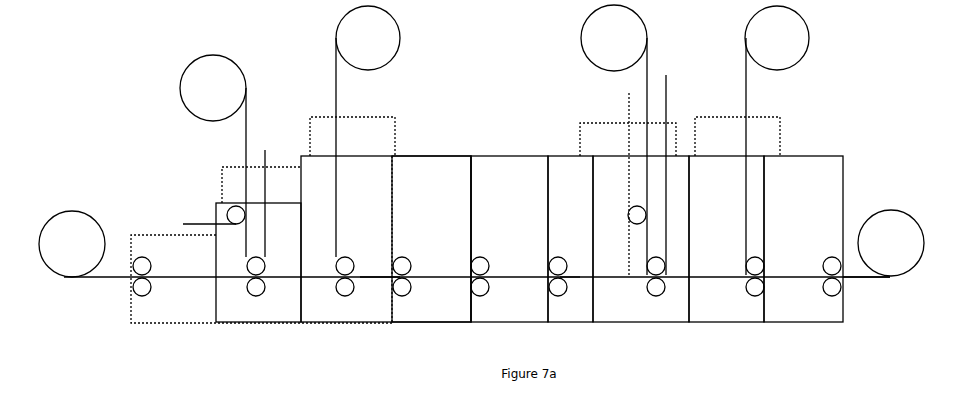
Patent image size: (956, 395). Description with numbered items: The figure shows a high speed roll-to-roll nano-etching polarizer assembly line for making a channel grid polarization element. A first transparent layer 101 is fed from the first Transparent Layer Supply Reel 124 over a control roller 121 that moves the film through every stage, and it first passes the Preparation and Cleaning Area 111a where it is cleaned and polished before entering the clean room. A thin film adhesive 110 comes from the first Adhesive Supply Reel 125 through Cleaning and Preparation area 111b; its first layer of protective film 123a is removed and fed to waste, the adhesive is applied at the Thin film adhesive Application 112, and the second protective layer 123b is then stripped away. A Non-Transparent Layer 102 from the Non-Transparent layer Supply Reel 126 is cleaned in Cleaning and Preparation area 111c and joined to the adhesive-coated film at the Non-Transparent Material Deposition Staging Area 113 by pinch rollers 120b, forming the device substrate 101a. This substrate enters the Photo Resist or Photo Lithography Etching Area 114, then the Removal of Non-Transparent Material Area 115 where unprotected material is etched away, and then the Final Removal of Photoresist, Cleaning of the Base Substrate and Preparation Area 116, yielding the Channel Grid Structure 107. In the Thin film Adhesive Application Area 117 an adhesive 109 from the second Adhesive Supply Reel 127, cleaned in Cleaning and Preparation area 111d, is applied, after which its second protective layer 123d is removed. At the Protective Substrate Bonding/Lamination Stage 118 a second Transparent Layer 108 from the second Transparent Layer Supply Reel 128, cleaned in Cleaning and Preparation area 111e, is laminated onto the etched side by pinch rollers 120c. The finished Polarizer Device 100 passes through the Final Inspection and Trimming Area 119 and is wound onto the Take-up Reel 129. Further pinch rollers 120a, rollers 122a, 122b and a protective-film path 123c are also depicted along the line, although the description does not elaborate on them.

The Polarizer Device 100 is at (873, 298).
The First Transparent Layer 101 is at (471, 298).
The device substrate 101a is at (373, 280).
The Non-Transparent Layer 102 is at (334, 71).
The Channel Grid Structure 107 is at (585, 259).
The second Transparent Layer 108 is at (723, 156).
The adhesive 109 is at (670, 156).
The thin film adhesive 110 is at (244, 162).
The Preparation and Cleaning Area 111a is at (261, 239).
The Cleaning and Preparation area 111b is at (261, 185).
The Cleaning and Preparation area 111c is at (352, 136).
The Cleaning and Preparation area 111d is at (628, 139).
The Cleaning and Preparation area 111e is at (737, 136).
The Thin film adhesive Application 112 is at (258, 262).
The Non-Transparent Material Deposition Staging Area 113 is at (386, 239).
The Photo Resist or Photo Lithography Etching Area 114 is at (431, 239).
The Removal of Non-Transparent Material Area 115 is at (509, 239).
The Final Removal of Photoresist, Cleaning of the Base Substrate and Preparation Are 116 is at (570, 239).
The Thin film Adhesive Application Area 117 is at (641, 239).
The Protective Substrate Bonding/Lamination Stage 118 is at (726, 239).
The Final Inspection and Trimming Area 119 is at (803, 239).
The first nip roller pair 120a is at (262, 283).
The pinch rollers 120b is at (355, 282).
The pinch rollers 120c is at (650, 268).
The control roller 121 is at (151, 268).
The first idler roller 122a is at (206, 203).
The second idler roller 122b is at (607, 208).
The first layer of protective film 123a is at (185, 210).
The second protective layer 123b is at (266, 162).
The third guide 123c is at (627, 115).
The second protective layer 123d is at (694, 175).
The first Transparent Layer Supply Reel 124 is at (72, 244).
The first Adhesive Supply Reel 125 is at (213, 88).
The Non-Transparent layer Supply Reel 126 is at (368, 38).
The second Adhesive Supply Reel 127 is at (614, 38).
The second Transparent Layer Supply Reel 128 is at (777, 38).
The Take-up Reel 129 is at (891, 243).